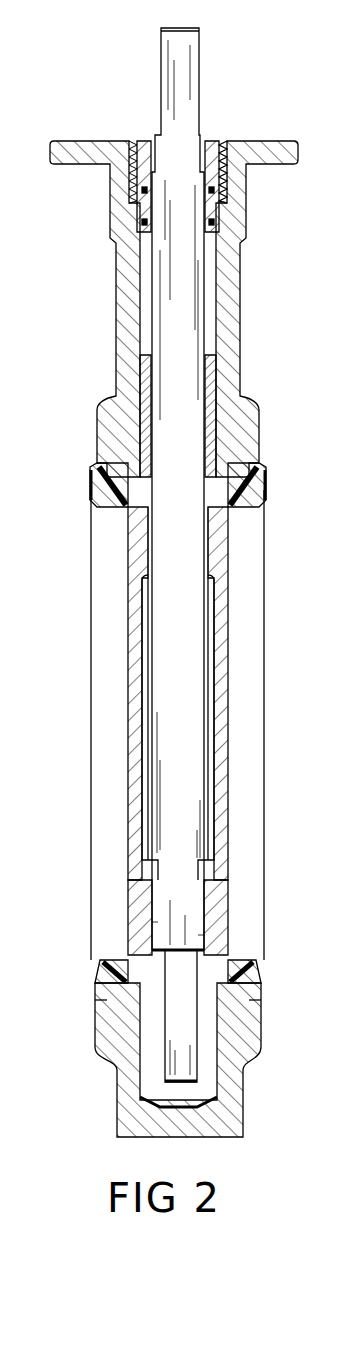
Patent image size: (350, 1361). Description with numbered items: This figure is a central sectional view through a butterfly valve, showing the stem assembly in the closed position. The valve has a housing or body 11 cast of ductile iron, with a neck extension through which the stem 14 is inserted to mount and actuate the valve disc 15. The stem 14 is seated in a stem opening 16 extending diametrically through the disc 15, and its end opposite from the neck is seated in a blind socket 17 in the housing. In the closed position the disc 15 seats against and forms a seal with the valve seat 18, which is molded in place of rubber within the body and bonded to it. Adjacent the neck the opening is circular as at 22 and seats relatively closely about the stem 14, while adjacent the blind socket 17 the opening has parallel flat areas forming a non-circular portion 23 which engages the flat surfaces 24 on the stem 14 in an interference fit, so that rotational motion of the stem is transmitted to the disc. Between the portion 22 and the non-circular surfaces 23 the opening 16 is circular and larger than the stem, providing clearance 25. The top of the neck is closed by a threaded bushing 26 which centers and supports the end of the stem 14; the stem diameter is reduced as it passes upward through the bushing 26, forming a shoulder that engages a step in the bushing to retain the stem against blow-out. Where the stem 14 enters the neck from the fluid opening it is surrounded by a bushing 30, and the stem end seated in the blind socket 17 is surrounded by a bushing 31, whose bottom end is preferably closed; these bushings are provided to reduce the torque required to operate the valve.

The body 11 is at (243, 273).
The stem 14 is at (198, 56).
The valve disc 15 is at (213, 674).
The stem opening 16 is at (210, 555).
The blind socket 17 is at (138, 1073).
The valve seat 18 is at (112, 505).
The circular portion of opening 22 is at (227, 535).
The non-circular portion 23 is at (203, 912).
The flat surfaces 24 is at (157, 922).
The clearance 25 is at (213, 607).
The threaded bushing 26 is at (226, 152).
The bushing 30 is at (212, 368).
The bushing 31 is at (207, 1068).